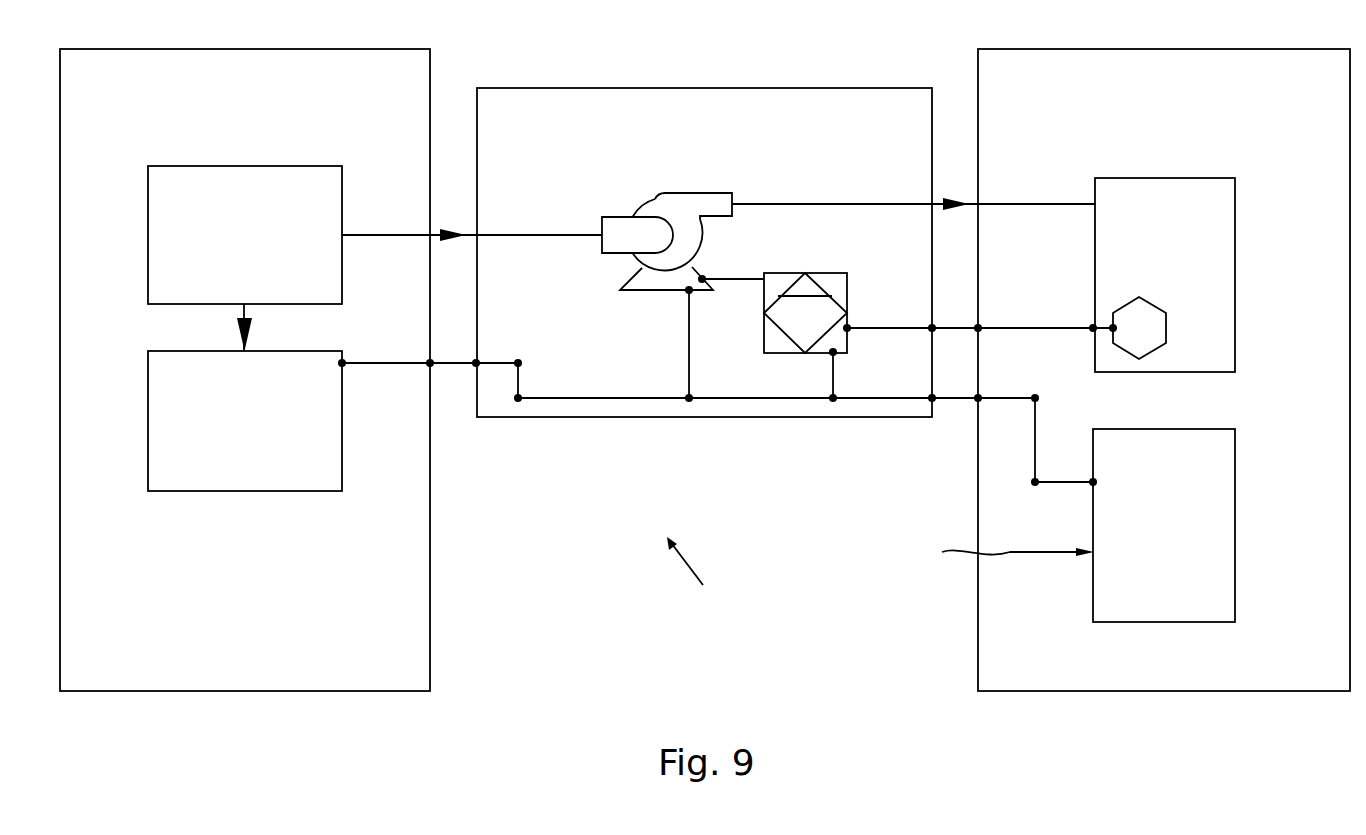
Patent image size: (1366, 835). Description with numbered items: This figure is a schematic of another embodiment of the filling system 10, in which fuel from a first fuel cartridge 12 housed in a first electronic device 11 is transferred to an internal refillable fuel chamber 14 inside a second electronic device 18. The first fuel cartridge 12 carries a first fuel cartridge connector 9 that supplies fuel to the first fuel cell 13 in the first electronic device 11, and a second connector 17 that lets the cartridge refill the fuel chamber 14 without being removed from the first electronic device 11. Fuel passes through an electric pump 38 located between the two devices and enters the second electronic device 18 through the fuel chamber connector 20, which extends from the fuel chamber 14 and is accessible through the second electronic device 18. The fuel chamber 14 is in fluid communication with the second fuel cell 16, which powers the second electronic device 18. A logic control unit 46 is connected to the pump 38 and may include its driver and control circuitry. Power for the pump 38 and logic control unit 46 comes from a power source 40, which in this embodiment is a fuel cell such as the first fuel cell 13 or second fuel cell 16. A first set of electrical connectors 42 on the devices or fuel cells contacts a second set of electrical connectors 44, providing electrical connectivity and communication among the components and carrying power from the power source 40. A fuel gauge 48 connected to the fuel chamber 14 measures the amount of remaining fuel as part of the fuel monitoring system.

The first fuel cartridge connector 9 is at (245, 311).
The filling system 10 is at (698, 573).
The first electronic device 11 is at (246, 49).
The first fuel cartridge 12 is at (217, 166).
The first fuel cell 13 is at (273, 491).
The fuel chamber 14 is at (1180, 226).
The second fuel cell 16 is at (1180, 528).
The second connector 17 is at (438, 235).
The second electronic device 18 is at (1128, 49).
The fuel chamber connector 20 is at (1058, 204).
The electric pump 38 is at (618, 217).
The power source 40 is at (1002, 552).
The first set of electrical connectors 42 is at (431, 366).
The second set of electrical connectors 44 is at (476, 365).
The logic control unit 46 is at (849, 277).
The fuel gauge 48 is at (1151, 305).